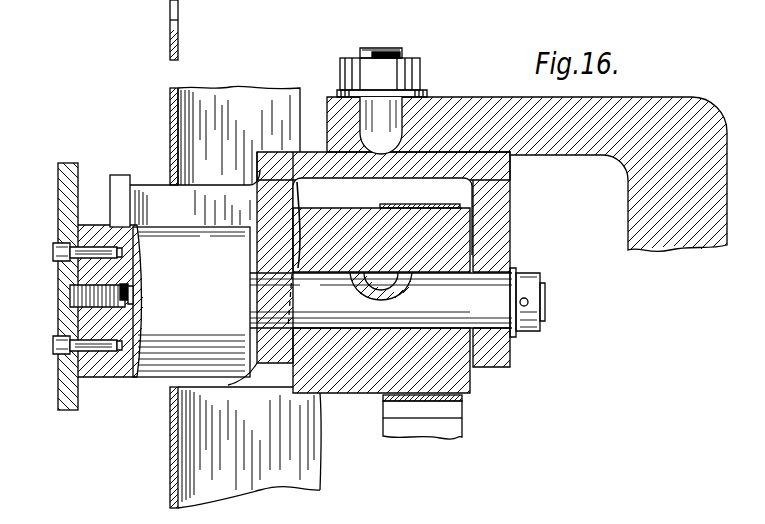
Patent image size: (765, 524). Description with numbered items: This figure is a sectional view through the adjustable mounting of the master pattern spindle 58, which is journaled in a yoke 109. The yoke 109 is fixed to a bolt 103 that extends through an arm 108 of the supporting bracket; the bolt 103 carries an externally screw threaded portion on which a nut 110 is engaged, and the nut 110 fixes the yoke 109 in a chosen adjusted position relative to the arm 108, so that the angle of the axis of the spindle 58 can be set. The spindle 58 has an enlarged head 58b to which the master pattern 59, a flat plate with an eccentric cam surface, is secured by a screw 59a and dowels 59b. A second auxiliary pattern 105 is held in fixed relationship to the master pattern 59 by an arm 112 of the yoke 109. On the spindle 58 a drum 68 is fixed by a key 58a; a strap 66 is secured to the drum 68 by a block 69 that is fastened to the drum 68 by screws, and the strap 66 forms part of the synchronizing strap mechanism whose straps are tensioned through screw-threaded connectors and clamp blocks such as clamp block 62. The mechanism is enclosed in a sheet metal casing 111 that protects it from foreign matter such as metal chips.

The sheet metal casing 111 is at (178, 46).
The bolt 103 is at (384, 49).
The nut 110 is at (356, 68).
The arm 108 is at (505, 97).
The master pattern 59 is at (70, 163).
The second auxiliary pattern 105 is at (120, 175).
The arm 112 is at (185, 211).
The strap 66 is at (431, 188).
The dowels 59b is at (118, 250).
The screw 59a is at (126, 297).
The yoke 109 is at (510, 245).
The master pattern spindle 58 is at (348, 304).
The key 58a is at (392, 282).
The enlarged head 58b is at (158, 378).
The drum 68 is at (398, 400).
The block 69 is at (452, 403).
The clamp block 62 is at (452, 433).